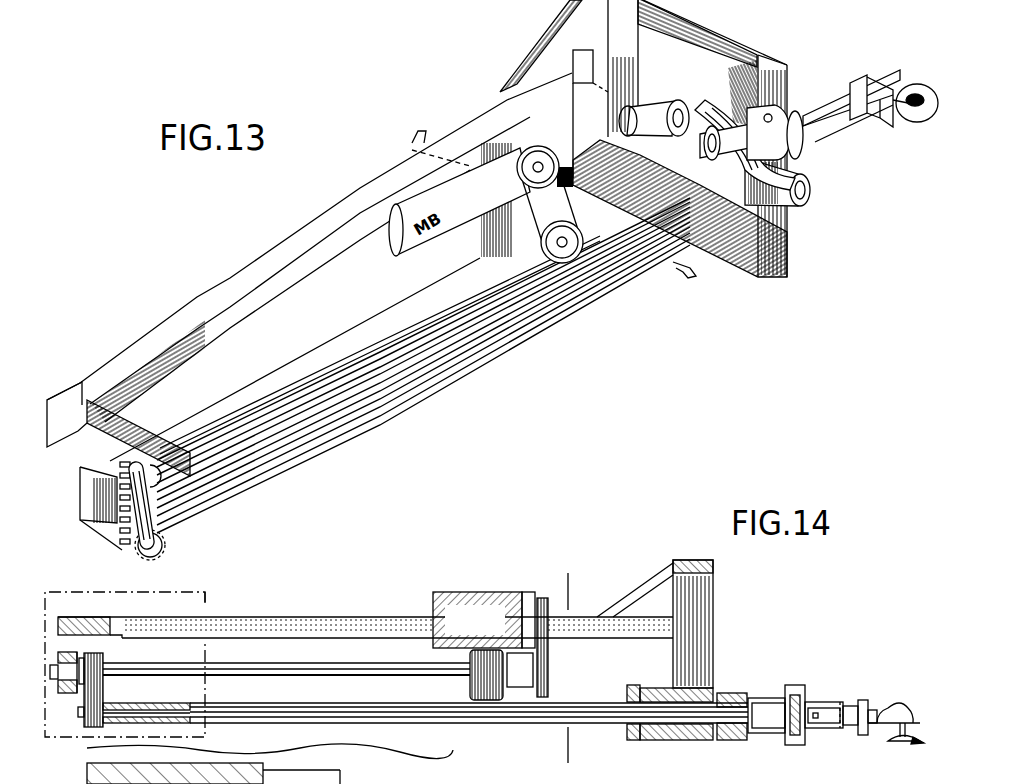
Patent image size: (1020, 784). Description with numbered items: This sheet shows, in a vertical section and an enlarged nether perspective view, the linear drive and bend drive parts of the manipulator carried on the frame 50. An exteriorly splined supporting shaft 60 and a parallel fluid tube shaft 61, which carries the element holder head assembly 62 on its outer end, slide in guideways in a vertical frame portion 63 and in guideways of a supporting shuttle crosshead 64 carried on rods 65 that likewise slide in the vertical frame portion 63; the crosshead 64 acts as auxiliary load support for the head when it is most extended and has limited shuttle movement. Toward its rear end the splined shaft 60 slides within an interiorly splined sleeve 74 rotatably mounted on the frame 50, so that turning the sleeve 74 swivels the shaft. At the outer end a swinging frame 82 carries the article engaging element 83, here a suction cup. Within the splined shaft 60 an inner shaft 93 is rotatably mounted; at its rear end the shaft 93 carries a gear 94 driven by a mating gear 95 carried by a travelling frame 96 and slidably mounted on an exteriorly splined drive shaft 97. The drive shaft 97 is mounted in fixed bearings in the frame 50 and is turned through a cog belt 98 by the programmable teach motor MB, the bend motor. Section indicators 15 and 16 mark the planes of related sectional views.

In FIG. 13, the frame 50 is at (200, 296).
In FIG. 14, the frame 50 is at (334, 616).
In FIG. 13, the splined supporting rod or shaft 60 is at (373, 405).
In FIG. 14, the splined supporting rod or shaft 60 is at (493, 726).
In FIG. 13, the fluid rod, tube, or shaft 61 is at (717, 107).
In FIG. 13, the element holder head assembly 62 is at (813, 163).
In FIG. 13, the vertical frame portion 63 is at (752, 277).
In FIG. 14, the vertical frame portion 63 is at (708, 627).
In FIG. 13, the supporting shuttle crosshead 64 is at (800, 222).
In FIG. 14, the supporting shuttle crosshead 64 is at (739, 738).
In FIG. 13, the rods 65 is at (566, 176).
In FIG. 14, the interiorly splined sleeve 74 is at (655, 740).
In FIG. 13, the swinging frame 82 is at (840, 88).
In FIG. 14, the swinging frame 82 is at (877, 690).
In FIG. 13, the article engaging element 83 is at (921, 115).
In FIG. 14, the article engaging element 83 is at (898, 742).
In FIG. 14, the shaft 93 is at (176, 693).
In FIG. 13, the gear 94 is at (153, 557).
In FIG. 14, the gear 94 is at (90, 728).
In FIG. 13, the mating gear 95 is at (133, 463).
In FIG. 14, the mating gear 95 is at (103, 657).
In FIG. 13, the travelling frame 96 is at (129, 549).
In FIG. 13, the exteriorly splined drive shaft 97 is at (377, 343).
In FIG. 14, the exteriorly splined drive shaft 97 is at (334, 669).
In FIG. 13, the cog belt 98 is at (528, 152).
In FIG. 14, the cog belt 98 is at (548, 658).
In FIG. 14, the section line 15 is at (212, 594).
In FIG. 14, the section line 16 is at (572, 580).